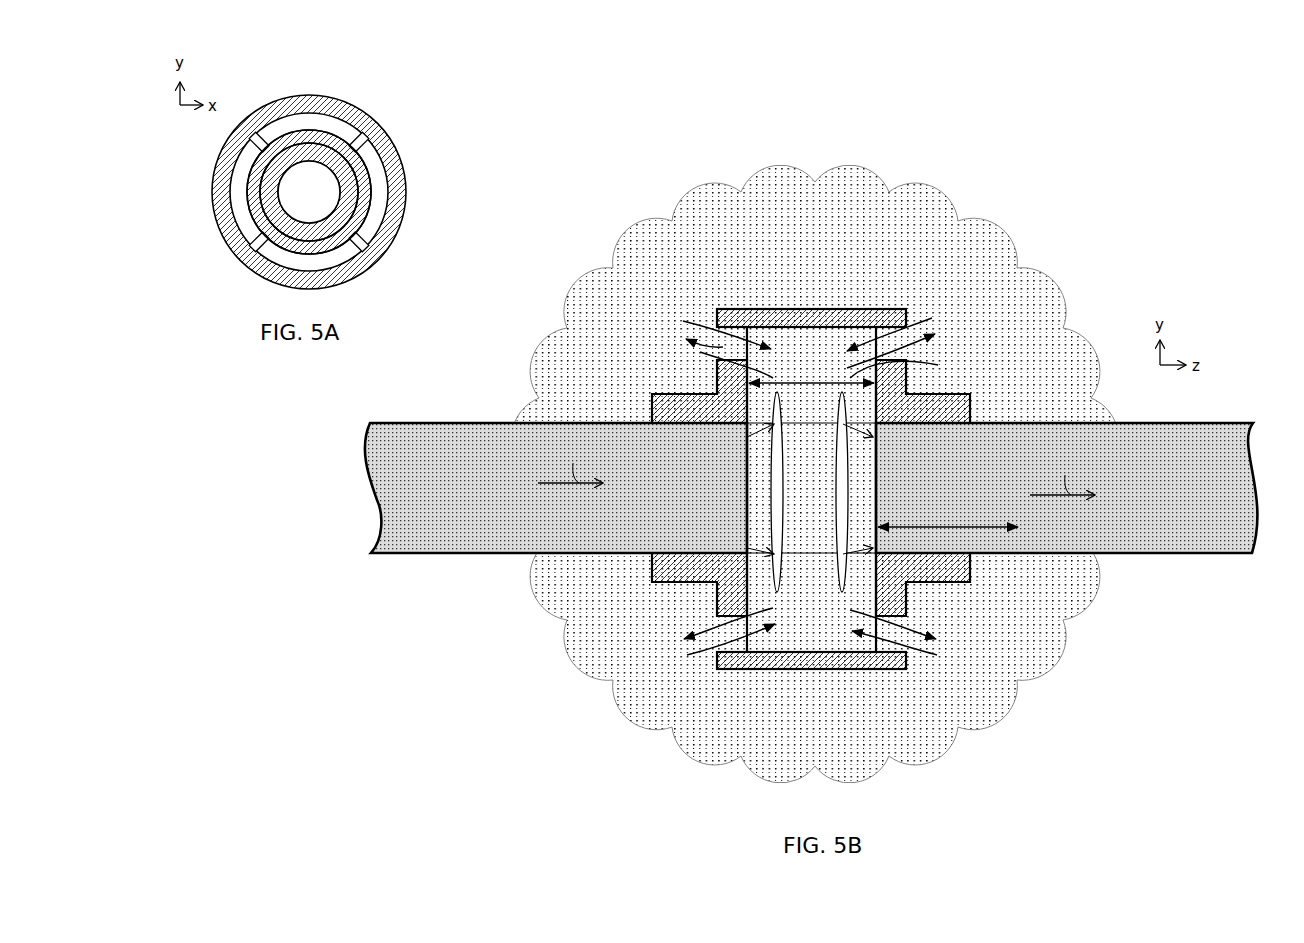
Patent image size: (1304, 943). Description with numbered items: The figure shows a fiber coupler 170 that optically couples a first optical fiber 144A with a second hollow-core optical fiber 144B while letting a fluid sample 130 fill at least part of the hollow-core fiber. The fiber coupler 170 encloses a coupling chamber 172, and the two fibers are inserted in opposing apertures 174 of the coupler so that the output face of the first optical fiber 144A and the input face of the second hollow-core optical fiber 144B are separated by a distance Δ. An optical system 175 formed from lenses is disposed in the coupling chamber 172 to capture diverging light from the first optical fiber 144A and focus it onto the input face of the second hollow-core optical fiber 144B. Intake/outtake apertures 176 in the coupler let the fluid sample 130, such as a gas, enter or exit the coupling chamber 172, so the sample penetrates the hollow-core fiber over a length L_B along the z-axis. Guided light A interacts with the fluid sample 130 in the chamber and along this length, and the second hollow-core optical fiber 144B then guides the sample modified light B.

In FIG. 5B, the fluid sample 130 is at (949, 234).
In FIG. 5B, the first optical fiber 144A is at (458, 533).
In FIG. 5B, the second hollow-core optical fiber 144B is at (1231, 538).
In FIG. 5A, the fiber coupler 170 is at (324, 165).
In FIG. 5B, the fiber coupler 170 is at (797, 494).
In FIG. 5B, the coupling chamber 172 is at (808, 338).
In FIG. 5A, the opposing apertures 174 is at (300, 193).
In FIG. 5B, the opposing apertures 174 is at (651, 556).
In FIG. 5B, the optical system 175 is at (777, 592).
In FIG. 5A, the intake/outtake apertures 176 is at (326, 122).
In FIG. 5B, the intake/outtake apertures 176 is at (723, 347).